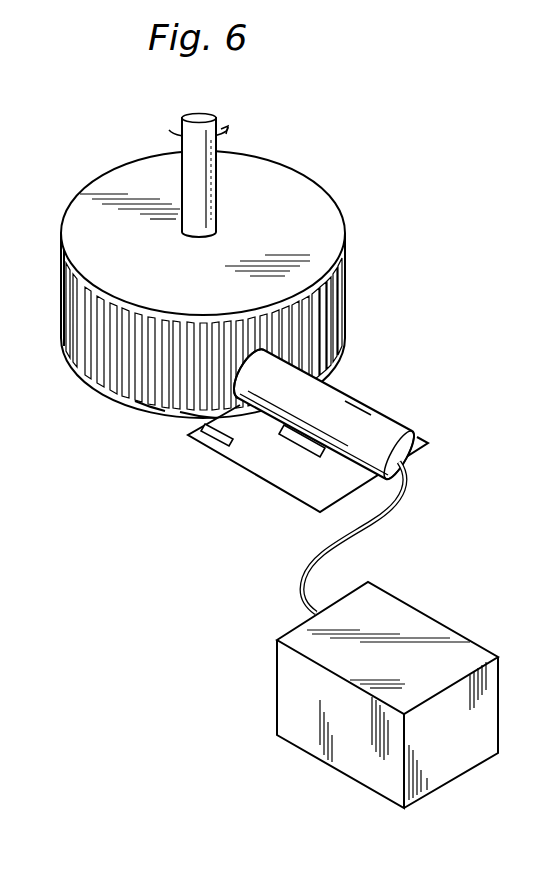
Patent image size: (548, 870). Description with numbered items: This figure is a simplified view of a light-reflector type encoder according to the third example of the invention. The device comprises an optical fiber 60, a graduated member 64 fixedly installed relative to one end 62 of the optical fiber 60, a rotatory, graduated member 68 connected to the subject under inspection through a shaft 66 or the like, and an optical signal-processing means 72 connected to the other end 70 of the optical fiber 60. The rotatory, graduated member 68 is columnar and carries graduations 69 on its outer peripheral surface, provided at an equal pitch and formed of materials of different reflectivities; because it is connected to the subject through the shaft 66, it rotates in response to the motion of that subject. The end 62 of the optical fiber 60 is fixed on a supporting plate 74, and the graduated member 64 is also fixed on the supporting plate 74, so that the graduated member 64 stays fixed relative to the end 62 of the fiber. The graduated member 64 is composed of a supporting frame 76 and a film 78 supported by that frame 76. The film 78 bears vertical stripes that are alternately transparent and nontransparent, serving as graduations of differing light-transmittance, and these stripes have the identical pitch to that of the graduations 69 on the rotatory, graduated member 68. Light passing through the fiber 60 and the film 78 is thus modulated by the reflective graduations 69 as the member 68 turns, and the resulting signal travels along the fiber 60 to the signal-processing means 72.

The optical fiber 60 is at (382, 412).
The end of optical fiber 62 is at (240, 418).
The graduated member 64 is at (208, 436).
The shaft 66 is at (213, 178).
The rotatory graduated member 68 is at (219, 288).
The graduations 69 is at (102, 382).
The other end of optical fiber 70 is at (302, 590).
The optical signal-processing means 72 is at (312, 758).
The supporting plate 74 is at (298, 495).
The supporting frame 76 is at (197, 412).
The film 78 is at (152, 410).